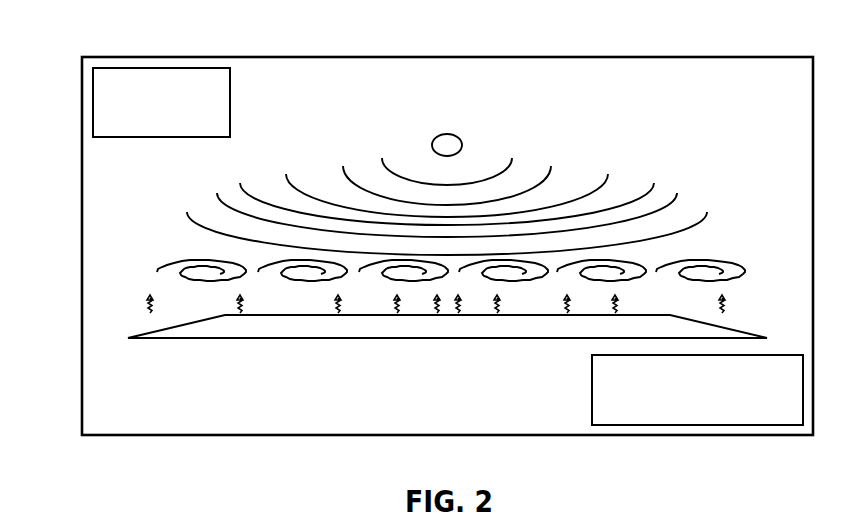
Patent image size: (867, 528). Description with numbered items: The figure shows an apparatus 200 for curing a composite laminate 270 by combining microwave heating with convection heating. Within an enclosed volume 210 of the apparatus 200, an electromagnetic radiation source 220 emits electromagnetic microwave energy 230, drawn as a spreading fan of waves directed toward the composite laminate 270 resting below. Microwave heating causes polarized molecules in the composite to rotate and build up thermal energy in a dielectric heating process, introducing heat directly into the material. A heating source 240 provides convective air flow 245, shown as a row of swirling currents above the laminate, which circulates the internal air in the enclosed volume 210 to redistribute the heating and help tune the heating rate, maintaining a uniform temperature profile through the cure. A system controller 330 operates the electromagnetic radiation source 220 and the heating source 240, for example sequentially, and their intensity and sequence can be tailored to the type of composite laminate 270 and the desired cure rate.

The apparatus 200 is at (107, 57).
The enclosed volume 210 is at (579, 126).
The electromagnetic radiation source 220 is at (447, 133).
The electromagnetic microwave energy 230 is at (283, 171).
The heating source 240 is at (143, 137).
The convective air flow 245 is at (191, 252).
The composite laminate 270 is at (422, 339).
The system controller 330 is at (592, 392).